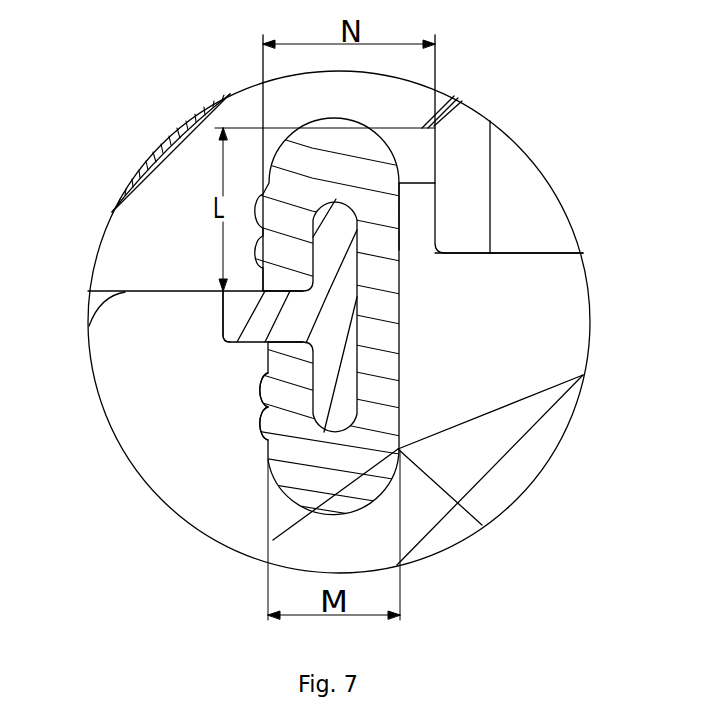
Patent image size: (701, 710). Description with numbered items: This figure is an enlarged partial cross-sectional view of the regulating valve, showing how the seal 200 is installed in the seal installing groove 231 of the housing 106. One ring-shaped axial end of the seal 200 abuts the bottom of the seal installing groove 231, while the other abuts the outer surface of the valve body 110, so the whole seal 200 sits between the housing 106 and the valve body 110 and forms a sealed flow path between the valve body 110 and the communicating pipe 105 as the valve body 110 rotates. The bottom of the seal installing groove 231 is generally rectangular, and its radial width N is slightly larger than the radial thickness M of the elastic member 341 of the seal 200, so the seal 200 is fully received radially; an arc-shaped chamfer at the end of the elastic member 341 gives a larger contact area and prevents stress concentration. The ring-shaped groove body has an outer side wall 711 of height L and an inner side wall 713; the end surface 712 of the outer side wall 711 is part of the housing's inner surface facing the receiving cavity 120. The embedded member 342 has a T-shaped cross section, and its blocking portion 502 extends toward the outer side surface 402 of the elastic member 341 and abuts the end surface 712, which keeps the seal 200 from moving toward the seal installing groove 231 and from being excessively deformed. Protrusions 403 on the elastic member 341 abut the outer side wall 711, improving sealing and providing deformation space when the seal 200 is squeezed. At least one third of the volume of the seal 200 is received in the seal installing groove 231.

The receiving cavity 120 is at (147, 440).
The housing 106 is at (162, 152).
The communicating pipe 105 is at (470, 125).
The outer side wall 711 is at (257, 142).
The inner side wall 713 is at (437, 200).
The end surface 712 is at (88, 328).
The seal installing groove 231 is at (418, 238).
The seal 200 is at (400, 325).
The elastic member 341 is at (385, 355).
The blocking portion 502 is at (245, 300).
The embedded member 342 is at (222, 322).
The outer side surface 402 is at (267, 357).
The protrusions 403 is at (257, 433).
The valve body 110 is at (513, 477).